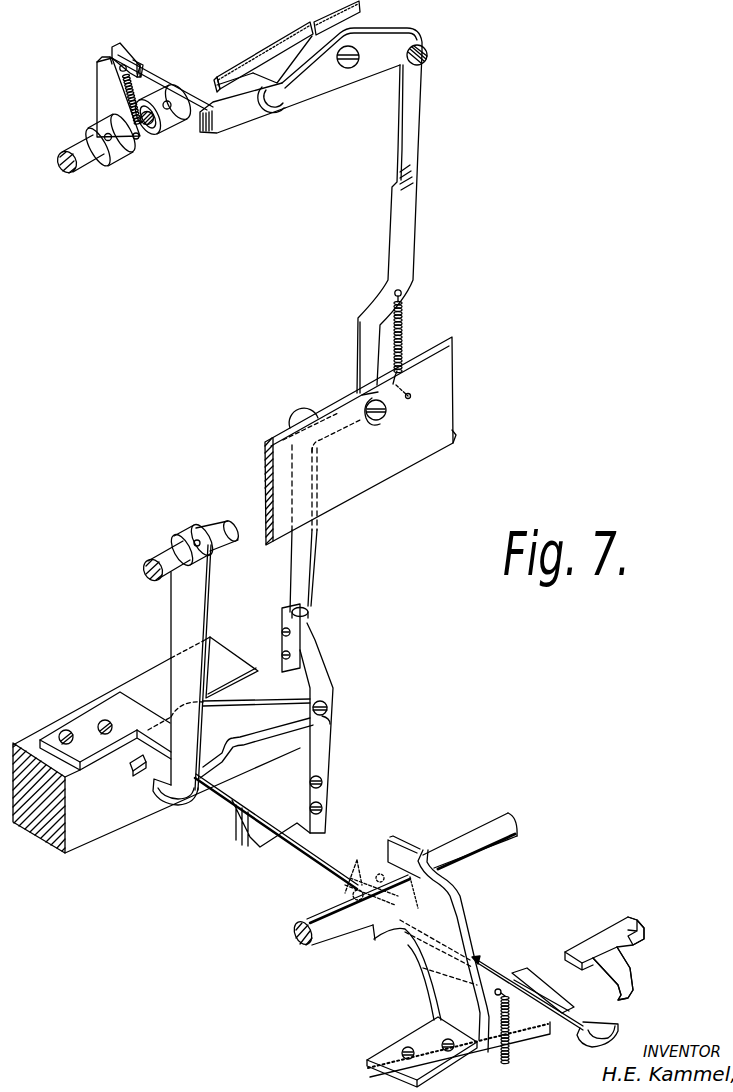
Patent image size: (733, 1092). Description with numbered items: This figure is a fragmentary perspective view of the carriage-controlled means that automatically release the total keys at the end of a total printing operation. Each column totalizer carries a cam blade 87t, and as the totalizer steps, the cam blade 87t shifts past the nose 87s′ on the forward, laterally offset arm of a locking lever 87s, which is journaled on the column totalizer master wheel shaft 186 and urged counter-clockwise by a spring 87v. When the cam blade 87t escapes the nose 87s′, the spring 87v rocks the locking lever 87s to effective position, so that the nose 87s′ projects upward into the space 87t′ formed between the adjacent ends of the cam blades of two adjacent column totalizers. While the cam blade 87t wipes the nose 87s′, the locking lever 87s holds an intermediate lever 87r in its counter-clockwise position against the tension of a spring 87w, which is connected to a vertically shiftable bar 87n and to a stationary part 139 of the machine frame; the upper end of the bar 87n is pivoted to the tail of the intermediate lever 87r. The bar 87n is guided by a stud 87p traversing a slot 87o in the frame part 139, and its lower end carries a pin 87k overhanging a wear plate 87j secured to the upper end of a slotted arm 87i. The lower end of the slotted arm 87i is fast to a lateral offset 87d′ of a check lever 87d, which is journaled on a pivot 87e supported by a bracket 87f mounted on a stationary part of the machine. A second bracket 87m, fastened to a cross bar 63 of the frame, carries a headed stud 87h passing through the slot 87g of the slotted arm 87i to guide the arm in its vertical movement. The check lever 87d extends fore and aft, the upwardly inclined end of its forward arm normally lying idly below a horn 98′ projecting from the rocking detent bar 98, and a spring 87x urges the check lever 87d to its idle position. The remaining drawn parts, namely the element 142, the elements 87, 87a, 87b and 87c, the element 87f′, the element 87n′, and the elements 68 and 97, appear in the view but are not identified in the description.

The shaft 142 is at (78, 170).
The column totalizer master wheel shaft 186 is at (148, 127).
The shaft 87 is at (157, 555).
The lever arm 87a is at (199, 603).
The hook 87b is at (157, 800).
The stop tab 87c is at (140, 772).
The check lever 87d is at (310, 878).
The lateral offset of the check lever 87d′ is at (300, 835).
The pivot 87e is at (370, 874).
The bracket 87f is at (445, 903).
The bracket tab 87f′ is at (423, 853).
The slot of the slotted arm 87g is at (352, 65).
The headed stud 87h is at (328, 720).
The slotted arm 87i is at (317, 680).
The wear plate 87j is at (292, 645).
The pin or projection 87k is at (305, 614).
The second bracket 87m is at (250, 730).
The vertically shiftable bar 87n is at (103, 102).
The lever tip 87n′ is at (110, 57).
The slot 87o is at (368, 422).
The stud 87p is at (388, 410).
The intermediate lever 87r is at (290, 97).
The locking lever 87s is at (198, 133).
The nose of the locking lever 87s′ is at (255, 75).
The cam blade 87t is at (388, 11).
The space between cam blades 87t′ is at (315, 33).
The spring 87v is at (140, 98).
The spring 87w is at (403, 323).
The spring 87x is at (512, 1047).
The stationary part of the frame 139 is at (445, 363).
The cross bar 63 is at (82, 835).
The rod 68 is at (510, 815).
The block 97 is at (640, 918).
The rocking detent bar 98 is at (590, 943).
The horn 98′ is at (615, 995).